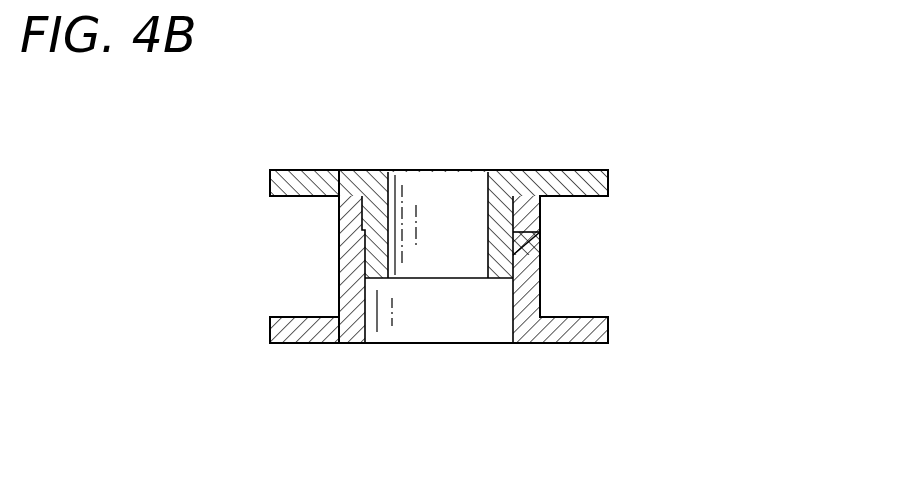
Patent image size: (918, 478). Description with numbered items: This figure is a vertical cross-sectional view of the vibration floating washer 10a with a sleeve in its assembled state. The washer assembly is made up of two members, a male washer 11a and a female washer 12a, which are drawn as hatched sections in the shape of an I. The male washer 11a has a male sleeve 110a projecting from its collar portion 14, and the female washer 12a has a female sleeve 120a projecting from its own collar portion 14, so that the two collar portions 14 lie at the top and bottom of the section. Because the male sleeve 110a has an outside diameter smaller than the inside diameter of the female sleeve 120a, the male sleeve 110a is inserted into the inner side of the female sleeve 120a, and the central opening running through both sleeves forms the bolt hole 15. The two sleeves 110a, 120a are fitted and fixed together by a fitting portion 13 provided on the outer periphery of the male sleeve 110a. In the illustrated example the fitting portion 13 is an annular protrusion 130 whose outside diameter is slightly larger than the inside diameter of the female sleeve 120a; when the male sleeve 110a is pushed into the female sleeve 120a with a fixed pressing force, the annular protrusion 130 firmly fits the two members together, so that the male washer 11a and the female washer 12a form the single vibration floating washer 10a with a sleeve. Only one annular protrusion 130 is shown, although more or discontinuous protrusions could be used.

The vibration floating washer with a sleeve 10a is at (598, 144).
The male washer 11a is at (628, 180).
The female washer 12a is at (584, 366).
The fitting portion 13 is at (513, 232).
The annular protrusion 130 is at (515, 247).
The collar portion 14 is at (321, 170).
The bolt hole 15 is at (428, 200).
The male sleeve 110a is at (488, 220).
The female sleeve 120a is at (514, 305).